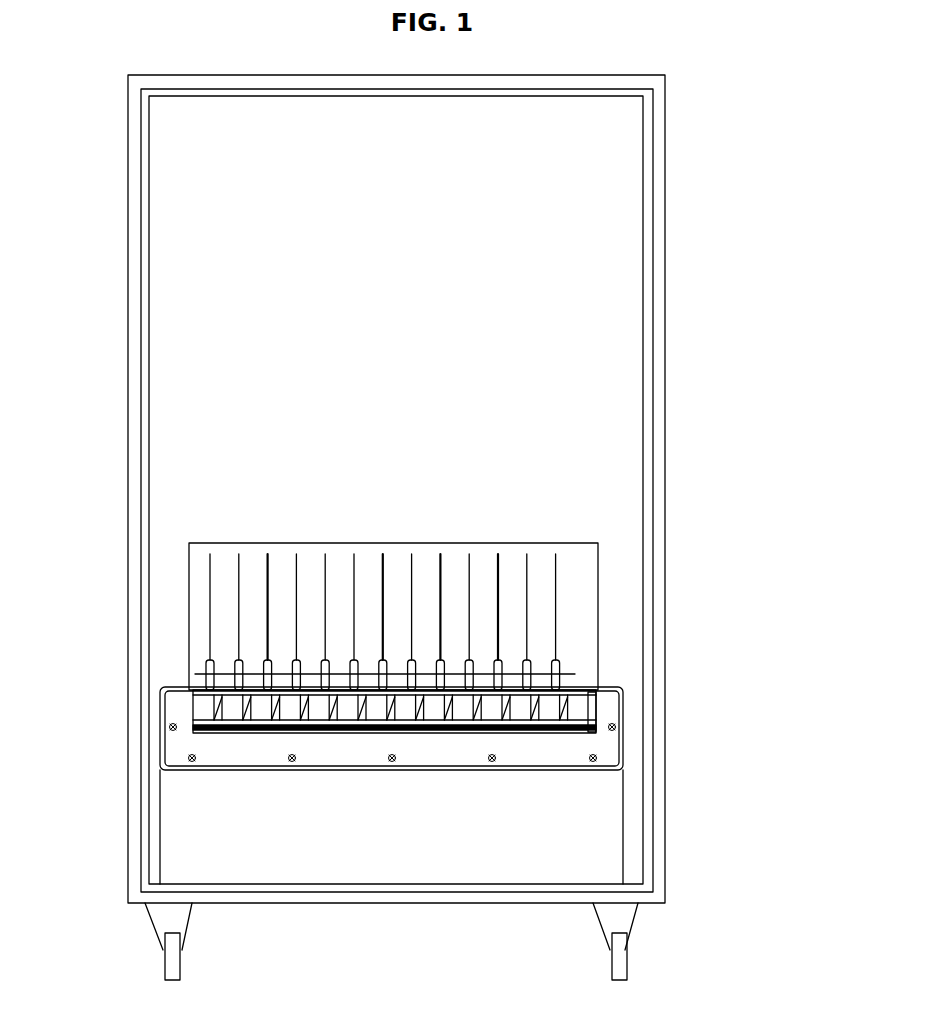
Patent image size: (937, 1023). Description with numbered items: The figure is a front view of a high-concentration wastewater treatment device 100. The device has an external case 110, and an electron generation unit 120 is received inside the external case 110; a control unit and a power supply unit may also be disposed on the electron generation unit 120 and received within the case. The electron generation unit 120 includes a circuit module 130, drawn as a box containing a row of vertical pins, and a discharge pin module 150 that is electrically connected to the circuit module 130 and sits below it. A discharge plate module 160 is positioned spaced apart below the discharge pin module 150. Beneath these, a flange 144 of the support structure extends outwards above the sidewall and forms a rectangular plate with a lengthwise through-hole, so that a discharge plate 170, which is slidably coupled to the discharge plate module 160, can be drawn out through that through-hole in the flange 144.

The high-concentration wastewater treatment device 100 is at (672, 143).
The external case 110 is at (665, 368).
The electron generation unit 120 is at (615, 627).
The circuit module 130 is at (205, 576).
The flange 144 is at (618, 753).
The discharge pin module 150 is at (216, 714).
The discharge plate module 160 is at (598, 708).
The discharge plate 170 is at (200, 733).